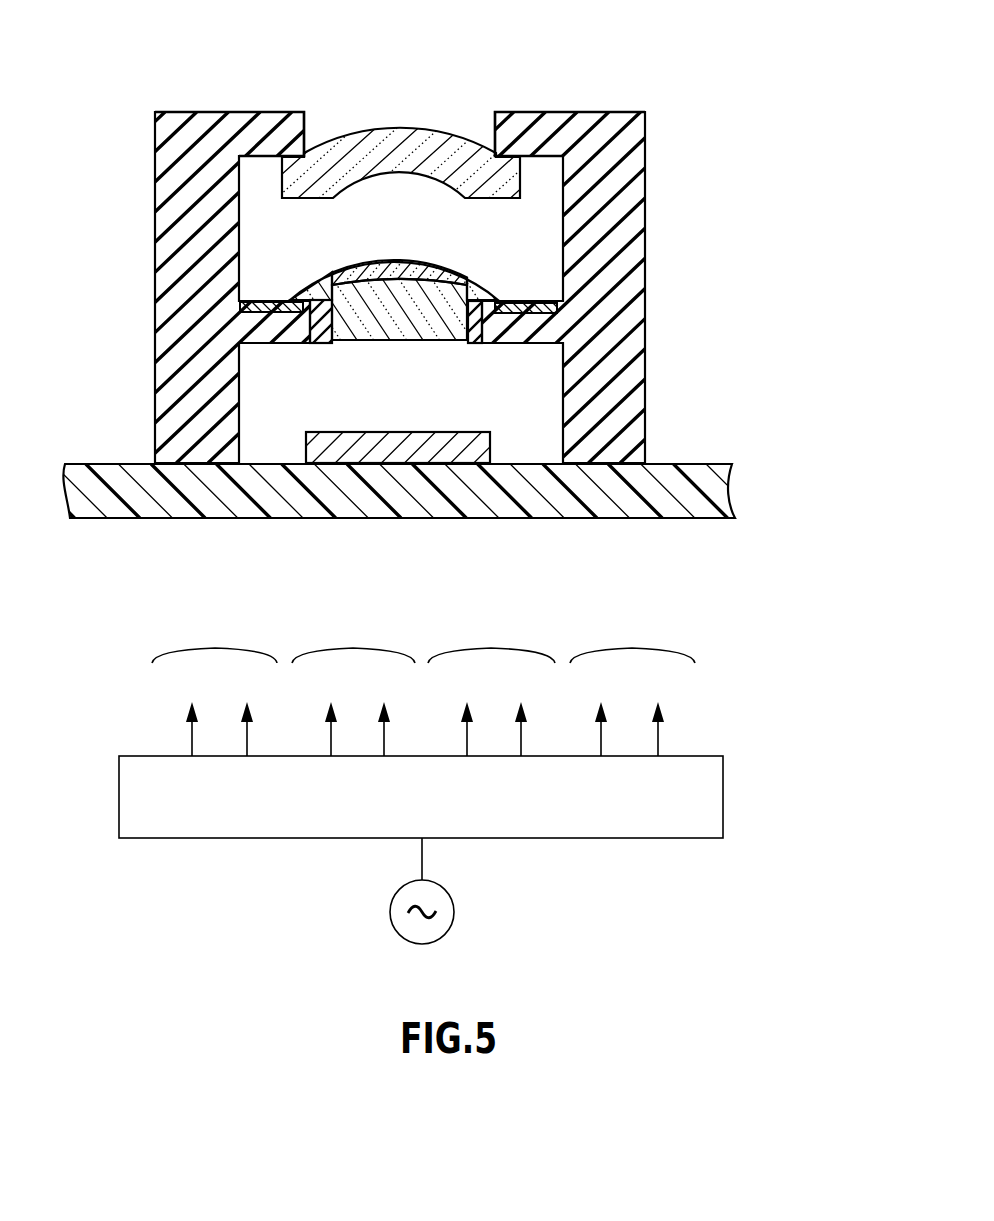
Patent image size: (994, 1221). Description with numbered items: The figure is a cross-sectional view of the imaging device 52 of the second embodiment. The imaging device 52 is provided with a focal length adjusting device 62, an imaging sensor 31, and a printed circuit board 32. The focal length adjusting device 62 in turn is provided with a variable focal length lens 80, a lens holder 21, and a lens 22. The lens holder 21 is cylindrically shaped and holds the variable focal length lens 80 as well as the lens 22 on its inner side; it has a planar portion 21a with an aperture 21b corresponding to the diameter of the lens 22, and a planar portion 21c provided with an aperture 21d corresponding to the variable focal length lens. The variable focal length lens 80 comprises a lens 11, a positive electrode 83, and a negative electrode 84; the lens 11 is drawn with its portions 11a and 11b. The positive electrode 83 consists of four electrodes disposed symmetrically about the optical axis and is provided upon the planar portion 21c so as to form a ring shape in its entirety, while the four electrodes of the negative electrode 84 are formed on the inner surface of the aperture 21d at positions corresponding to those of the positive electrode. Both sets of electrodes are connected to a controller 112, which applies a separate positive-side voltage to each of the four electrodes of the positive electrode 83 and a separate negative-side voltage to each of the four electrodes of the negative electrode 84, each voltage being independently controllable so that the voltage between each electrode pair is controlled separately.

The lens 11 is at (505, 247).
The lens body 11a is at (483, 292).
The lens surface layer 11b is at (447, 273).
The lens holder 21 is at (494, 261).
The planar portion 21a is at (268, 117).
The aperture 21b is at (495, 140).
The planar portion 21c is at (258, 338).
The aperture 21d is at (337, 307).
The lens 22 is at (382, 145).
The imaging sensor 31 is at (350, 450).
The printed circuit board 32 is at (187, 507).
The imaging device 52 is at (494, 312).
The focal length adjusting device 62 is at (494, 261).
The variable focal length lens 80 is at (525, 257).
The positive electrode 83 is at (548, 306).
The negative electrode 84 is at (572, 330).
The controller 112 is at (119, 795).